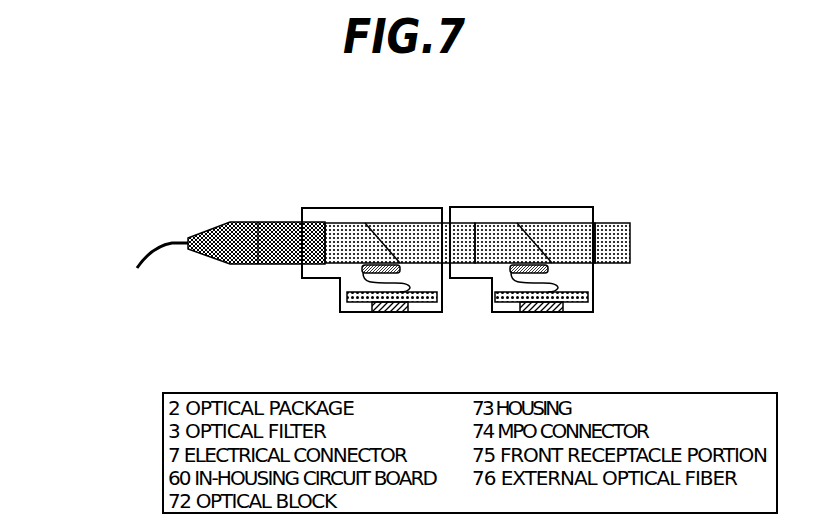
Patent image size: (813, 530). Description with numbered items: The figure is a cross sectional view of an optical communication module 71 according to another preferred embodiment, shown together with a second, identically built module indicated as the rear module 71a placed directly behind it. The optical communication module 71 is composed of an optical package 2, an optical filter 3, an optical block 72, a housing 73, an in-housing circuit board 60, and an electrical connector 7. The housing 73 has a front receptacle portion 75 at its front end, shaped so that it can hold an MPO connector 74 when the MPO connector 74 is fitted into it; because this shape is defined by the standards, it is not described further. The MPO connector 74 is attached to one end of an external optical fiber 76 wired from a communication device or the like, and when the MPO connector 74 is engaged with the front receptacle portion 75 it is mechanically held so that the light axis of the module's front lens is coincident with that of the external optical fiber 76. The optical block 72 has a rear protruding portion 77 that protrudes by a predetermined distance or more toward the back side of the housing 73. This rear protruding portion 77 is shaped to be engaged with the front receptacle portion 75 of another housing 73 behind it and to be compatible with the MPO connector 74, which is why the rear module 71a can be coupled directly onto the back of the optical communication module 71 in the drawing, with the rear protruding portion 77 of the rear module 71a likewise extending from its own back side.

The optical communication module 71 is at (331, 131).
The optical communication module (rear portion) 71a is at (546, 166).
The optical package 2 is at (362, 273).
The optical filter 3 is at (366, 222).
The electrical connector 7 is at (389, 312).
The in-housing circuit board 60 is at (353, 302).
The optical block 72 is at (390, 222).
The housing 73 is at (410, 207).
The MPO connector 74 is at (231, 222).
The front receptacle portion 75 is at (302, 208).
The external optical fiber 76 is at (152, 246).
The rear protruding portion 77 is at (462, 265).